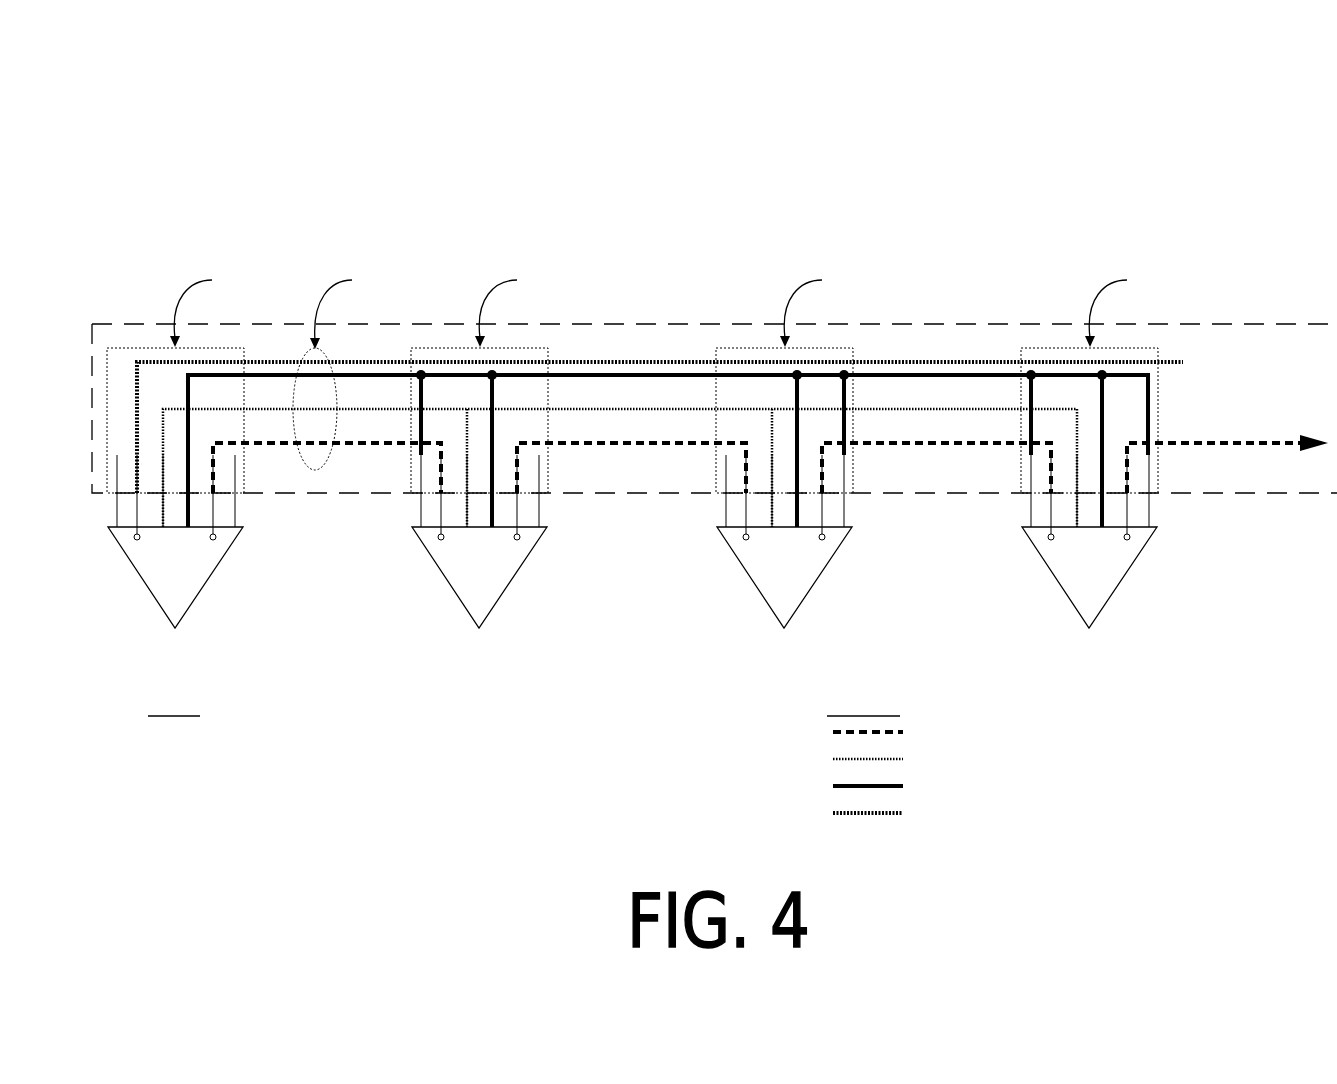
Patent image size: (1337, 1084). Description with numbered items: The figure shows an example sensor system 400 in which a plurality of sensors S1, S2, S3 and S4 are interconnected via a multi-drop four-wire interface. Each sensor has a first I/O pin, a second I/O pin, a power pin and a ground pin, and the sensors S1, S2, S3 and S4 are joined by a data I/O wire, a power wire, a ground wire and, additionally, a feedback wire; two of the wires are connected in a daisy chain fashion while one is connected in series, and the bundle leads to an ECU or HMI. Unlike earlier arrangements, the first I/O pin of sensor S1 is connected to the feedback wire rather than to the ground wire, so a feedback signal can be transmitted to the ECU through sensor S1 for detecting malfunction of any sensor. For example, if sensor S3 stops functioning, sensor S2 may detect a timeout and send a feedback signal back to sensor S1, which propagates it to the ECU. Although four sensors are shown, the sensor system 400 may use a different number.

The sensor system 400 is at (716, 70).
The sensor S1 is at (175, 541).
The sensor S2 is at (479, 541).
The sensor S3 is at (784, 541).
The sensor S4 is at (1089, 541).